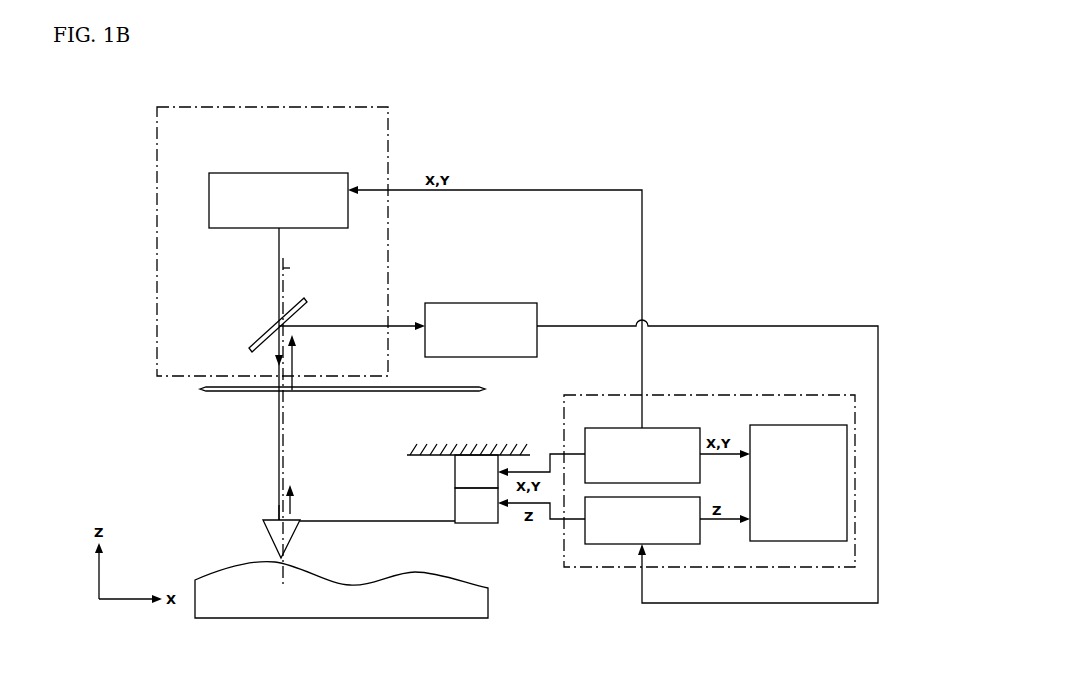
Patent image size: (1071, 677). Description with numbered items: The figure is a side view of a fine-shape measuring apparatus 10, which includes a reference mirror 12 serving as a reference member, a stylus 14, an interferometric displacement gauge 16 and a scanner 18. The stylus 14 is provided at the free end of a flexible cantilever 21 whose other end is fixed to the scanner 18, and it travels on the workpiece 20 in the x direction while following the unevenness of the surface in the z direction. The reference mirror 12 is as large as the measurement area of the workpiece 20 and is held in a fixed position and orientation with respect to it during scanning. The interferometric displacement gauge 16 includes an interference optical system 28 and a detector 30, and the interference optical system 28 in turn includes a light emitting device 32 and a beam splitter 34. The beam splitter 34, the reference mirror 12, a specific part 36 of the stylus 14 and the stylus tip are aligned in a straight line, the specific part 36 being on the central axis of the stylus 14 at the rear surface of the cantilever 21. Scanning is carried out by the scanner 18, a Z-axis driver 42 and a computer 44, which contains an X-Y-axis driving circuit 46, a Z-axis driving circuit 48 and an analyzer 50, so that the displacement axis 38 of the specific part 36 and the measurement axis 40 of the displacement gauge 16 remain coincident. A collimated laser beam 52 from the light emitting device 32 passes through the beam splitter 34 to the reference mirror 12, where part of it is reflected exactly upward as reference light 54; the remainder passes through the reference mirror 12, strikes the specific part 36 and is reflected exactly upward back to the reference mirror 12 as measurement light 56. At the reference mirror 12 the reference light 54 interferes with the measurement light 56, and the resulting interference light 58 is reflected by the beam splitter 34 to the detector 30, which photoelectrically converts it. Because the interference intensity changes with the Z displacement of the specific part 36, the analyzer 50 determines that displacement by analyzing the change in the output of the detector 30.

The measuring apparatus 10 is at (548, 148).
The reference mirror 12 is at (215, 392).
The stylus 14 is at (267, 537).
The interferometric displacement gauge 16 is at (432, 286).
The scanner 18 is at (456, 472).
The workpiece 20 is at (216, 575).
The cantilever 21 is at (413, 522).
The interference optical system 28 is at (156, 118).
The detector 30 is at (507, 288).
The light emitting device 32 is at (306, 156).
The beam splitter 34 is at (250, 350).
The specific part 36 is at (281, 517).
The displacement axis 38 is at (290, 268).
The measurement axis 40 is at (278, 433).
The Z-axis driver 42 is at (456, 500).
The computer 44 is at (752, 395).
The X-Y-axis driving circuit 46 is at (681, 428).
The Z-axis driving circuit 48 is at (686, 544).
The analyzer 50 is at (772, 425).
The laser beam 52 is at (278, 268).
The reference light 54 is at (292, 385).
The measurement light 56 is at (292, 505).
The interference light 58 is at (340, 325).